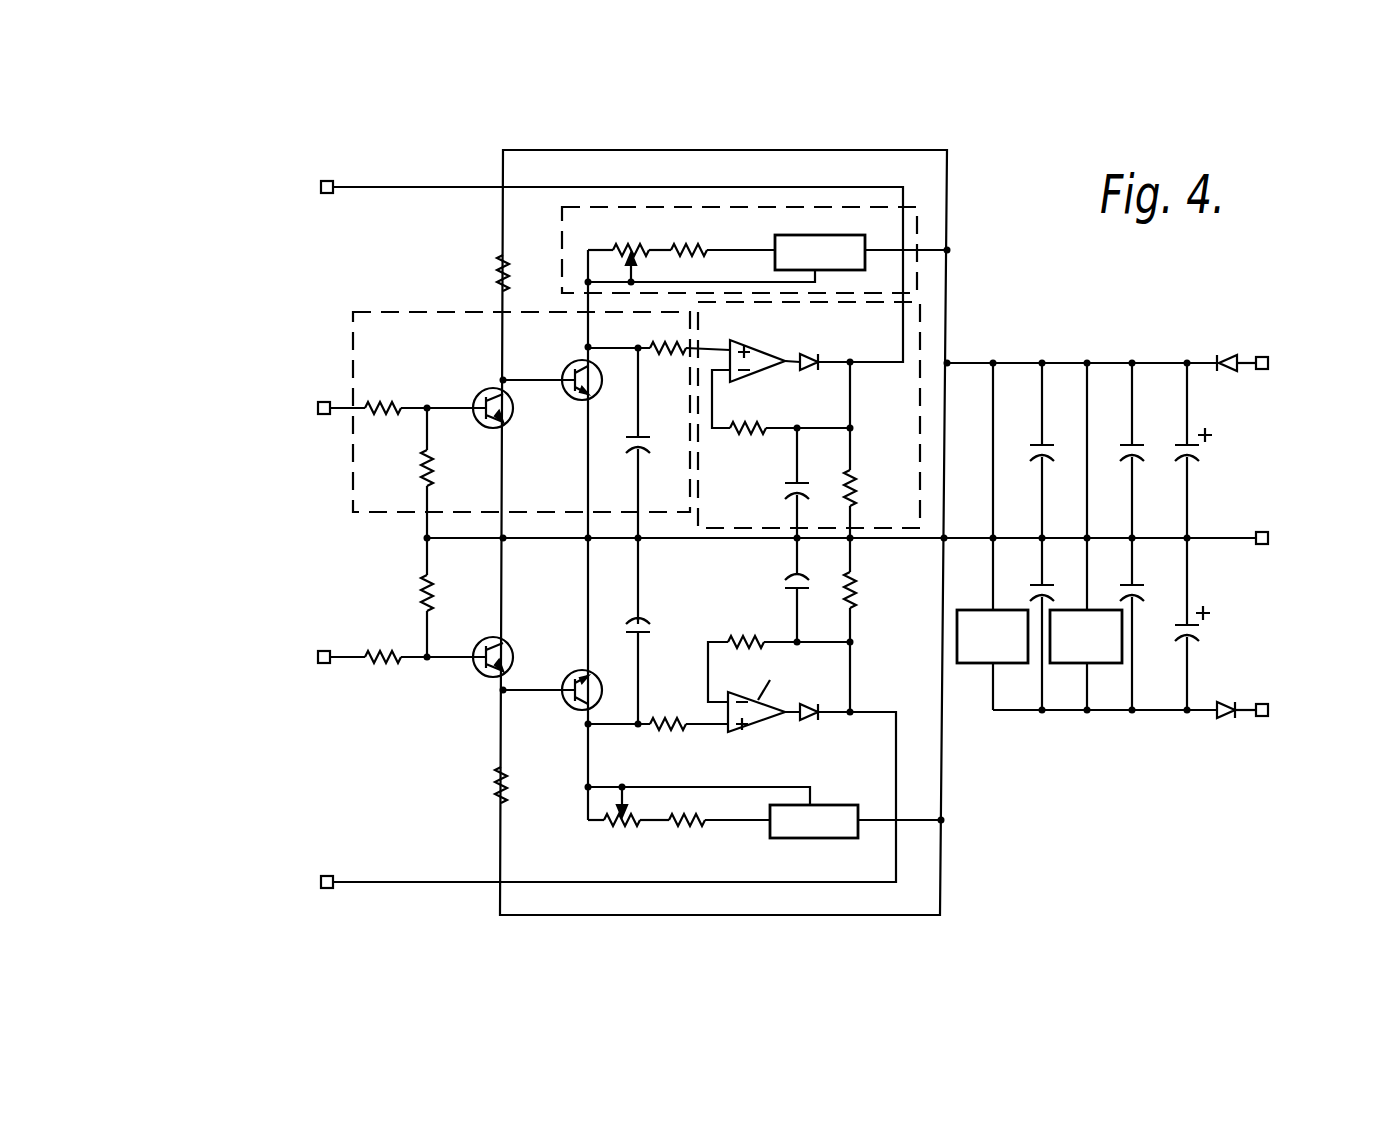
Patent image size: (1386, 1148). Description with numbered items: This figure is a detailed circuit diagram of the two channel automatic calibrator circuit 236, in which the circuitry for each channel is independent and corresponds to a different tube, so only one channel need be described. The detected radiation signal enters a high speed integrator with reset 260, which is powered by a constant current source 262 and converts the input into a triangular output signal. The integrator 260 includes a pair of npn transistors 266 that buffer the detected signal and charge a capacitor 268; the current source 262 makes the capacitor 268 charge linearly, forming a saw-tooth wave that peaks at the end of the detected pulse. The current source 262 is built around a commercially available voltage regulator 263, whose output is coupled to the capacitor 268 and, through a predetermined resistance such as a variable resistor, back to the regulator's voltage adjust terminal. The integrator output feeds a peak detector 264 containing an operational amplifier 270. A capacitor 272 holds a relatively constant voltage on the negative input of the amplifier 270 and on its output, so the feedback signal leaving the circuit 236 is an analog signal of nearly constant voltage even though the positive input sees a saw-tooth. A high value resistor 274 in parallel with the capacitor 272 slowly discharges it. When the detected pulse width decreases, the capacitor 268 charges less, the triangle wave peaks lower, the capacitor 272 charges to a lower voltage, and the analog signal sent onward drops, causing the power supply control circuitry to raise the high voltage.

The automatic calibration circuit 236 is at (421, 128).
The high speed integrator 260 is at (432, 325).
The constant current source 262 is at (585, 222).
The voltage regulator 263 is at (825, 250).
The peak detector 264 is at (913, 352).
The npn transistors 266 is at (478, 397).
The capacitor 268 is at (648, 436).
The operational amplifier 270 is at (756, 357).
The capacitor 272 is at (790, 485).
The resistor 274 is at (850, 500).